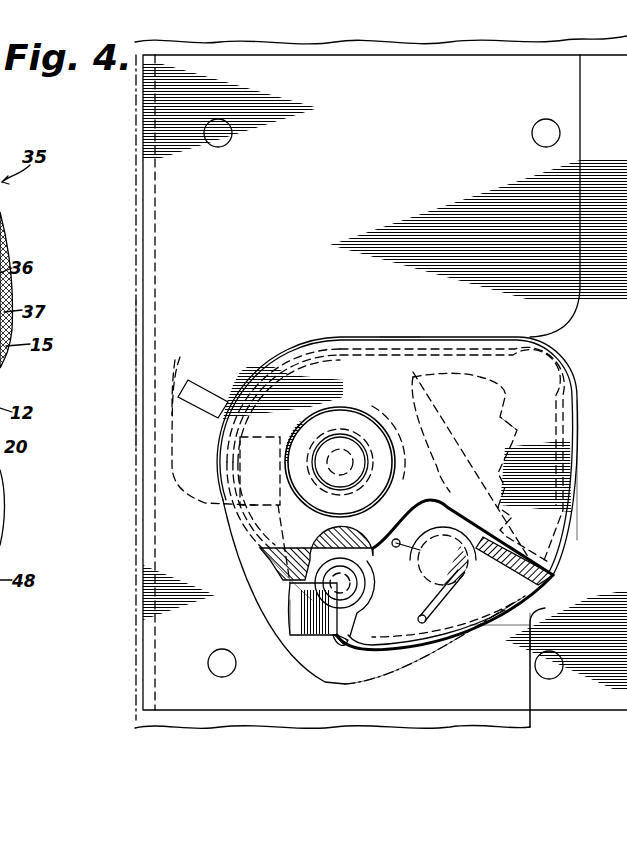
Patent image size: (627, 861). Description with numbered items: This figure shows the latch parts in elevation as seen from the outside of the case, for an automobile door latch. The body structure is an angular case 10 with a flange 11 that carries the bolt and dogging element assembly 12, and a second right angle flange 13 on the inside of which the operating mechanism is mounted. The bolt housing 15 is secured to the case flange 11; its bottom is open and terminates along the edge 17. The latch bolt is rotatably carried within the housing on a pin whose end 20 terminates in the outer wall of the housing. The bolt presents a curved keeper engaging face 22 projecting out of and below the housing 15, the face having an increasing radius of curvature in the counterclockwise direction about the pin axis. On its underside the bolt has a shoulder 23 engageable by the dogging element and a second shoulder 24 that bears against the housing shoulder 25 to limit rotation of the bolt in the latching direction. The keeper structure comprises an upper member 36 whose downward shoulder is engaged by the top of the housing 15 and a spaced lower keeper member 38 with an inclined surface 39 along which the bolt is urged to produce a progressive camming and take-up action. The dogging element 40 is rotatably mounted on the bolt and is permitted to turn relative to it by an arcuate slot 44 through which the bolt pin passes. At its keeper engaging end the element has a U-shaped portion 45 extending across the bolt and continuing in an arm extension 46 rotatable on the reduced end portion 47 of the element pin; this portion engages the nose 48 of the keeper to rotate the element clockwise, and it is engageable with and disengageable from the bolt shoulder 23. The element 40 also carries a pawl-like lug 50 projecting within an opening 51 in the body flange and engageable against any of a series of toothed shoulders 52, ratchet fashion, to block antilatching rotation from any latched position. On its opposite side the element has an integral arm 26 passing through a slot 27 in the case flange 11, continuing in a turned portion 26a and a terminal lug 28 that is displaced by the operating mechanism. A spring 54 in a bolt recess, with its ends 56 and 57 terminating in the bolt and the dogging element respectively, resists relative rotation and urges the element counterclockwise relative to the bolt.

The angular case 10 is at (130, 215).
The flange 11 is at (481, 170).
The bolt and dogging element assembly 12 is at (411, 360).
The second right angle flange 13 is at (137, 388).
The bolt housing 15 is at (540, 378).
The edge 17 is at (443, 556).
The pin end 20 is at (340, 475).
The keeper engaging face 22 is at (525, 615).
The shoulder 23 is at (292, 606).
The second shoulder 24 is at (262, 549).
The housing shoulder 25 is at (300, 552).
The arm 26 is at (210, 500).
The turned portion 26a is at (178, 398).
The slot 27 is at (262, 440).
The terminal lug 28 is at (214, 388).
The upper keeper member 36 is at (388, 328).
The lower keeper member 38 is at (510, 695).
The inclined surface 39 is at (390, 662).
The dogging element 40 is at (395, 397).
The arcuate slot 44 is at (400, 470).
The U-shaped portion 45 is at (290, 632).
The arm extension 46 is at (360, 603).
The reduced end portion 47 is at (341, 583).
The nose 48 is at (533, 608).
The lug 50 is at (470, 515).
The opening 51 is at (490, 392).
The toothed shoulders 52 is at (505, 430).
The spring 54 is at (452, 530).
The spring end 56 is at (396, 540).
The spring end 57 is at (418, 618).